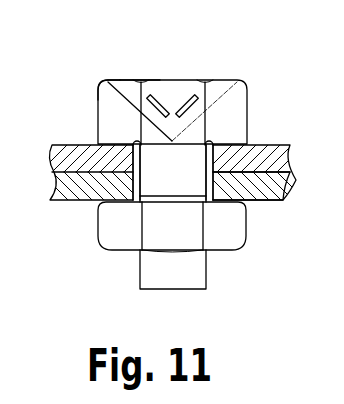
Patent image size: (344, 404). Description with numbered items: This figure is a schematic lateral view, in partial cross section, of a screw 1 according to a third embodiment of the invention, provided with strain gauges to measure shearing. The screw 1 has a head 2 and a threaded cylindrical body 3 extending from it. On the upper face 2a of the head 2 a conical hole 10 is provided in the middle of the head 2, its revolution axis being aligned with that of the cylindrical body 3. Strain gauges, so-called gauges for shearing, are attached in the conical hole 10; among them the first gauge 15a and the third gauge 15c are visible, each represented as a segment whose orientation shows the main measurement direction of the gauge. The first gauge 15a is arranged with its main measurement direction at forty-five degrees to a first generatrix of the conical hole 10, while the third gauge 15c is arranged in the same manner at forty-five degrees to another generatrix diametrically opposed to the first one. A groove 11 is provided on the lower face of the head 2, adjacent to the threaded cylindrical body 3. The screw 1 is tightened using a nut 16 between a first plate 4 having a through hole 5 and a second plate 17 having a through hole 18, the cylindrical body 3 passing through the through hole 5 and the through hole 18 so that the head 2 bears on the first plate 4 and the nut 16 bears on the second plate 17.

The screw 1 is at (264, 61).
The head 2 is at (93, 106).
The upper face 2a is at (118, 80).
The conical hole 10 is at (130, 90).
The first gauge 15a is at (165, 100).
The third gauge 15c is at (188, 103).
The groove 11 is at (213, 143).
The through hole 5 is at (128, 160).
The first plate 4 is at (270, 163).
The second plate 17 is at (292, 178).
The nut 16 is at (223, 240).
The through hole 18 is at (138, 198).
The cylindrical body 3 is at (214, 283).